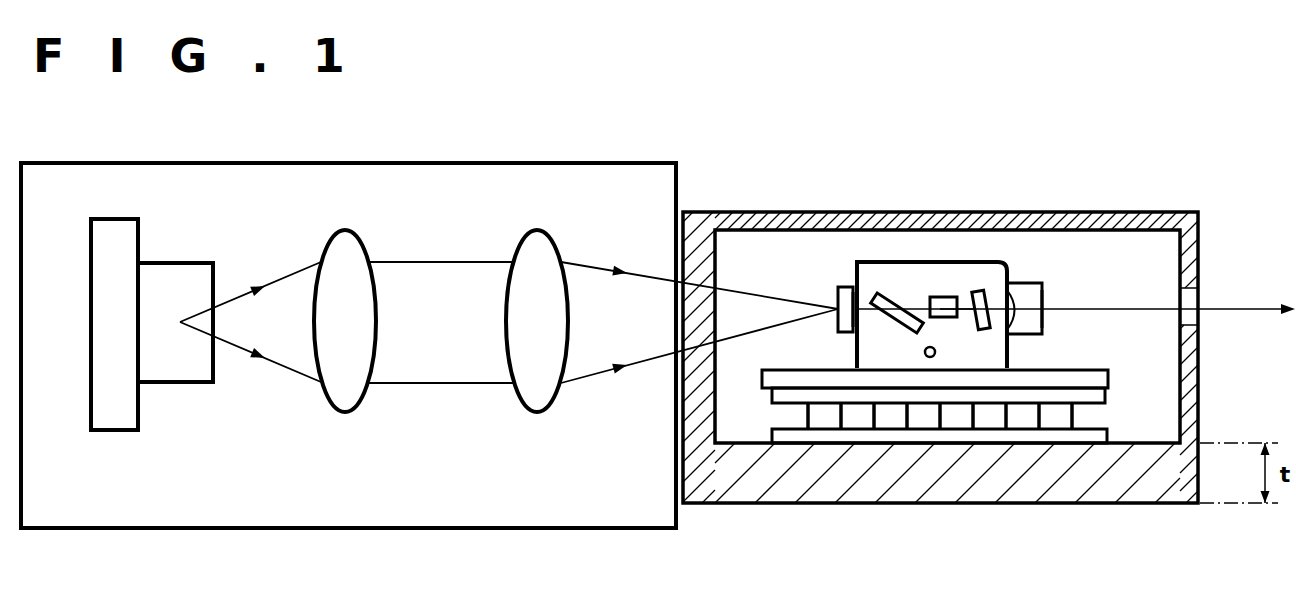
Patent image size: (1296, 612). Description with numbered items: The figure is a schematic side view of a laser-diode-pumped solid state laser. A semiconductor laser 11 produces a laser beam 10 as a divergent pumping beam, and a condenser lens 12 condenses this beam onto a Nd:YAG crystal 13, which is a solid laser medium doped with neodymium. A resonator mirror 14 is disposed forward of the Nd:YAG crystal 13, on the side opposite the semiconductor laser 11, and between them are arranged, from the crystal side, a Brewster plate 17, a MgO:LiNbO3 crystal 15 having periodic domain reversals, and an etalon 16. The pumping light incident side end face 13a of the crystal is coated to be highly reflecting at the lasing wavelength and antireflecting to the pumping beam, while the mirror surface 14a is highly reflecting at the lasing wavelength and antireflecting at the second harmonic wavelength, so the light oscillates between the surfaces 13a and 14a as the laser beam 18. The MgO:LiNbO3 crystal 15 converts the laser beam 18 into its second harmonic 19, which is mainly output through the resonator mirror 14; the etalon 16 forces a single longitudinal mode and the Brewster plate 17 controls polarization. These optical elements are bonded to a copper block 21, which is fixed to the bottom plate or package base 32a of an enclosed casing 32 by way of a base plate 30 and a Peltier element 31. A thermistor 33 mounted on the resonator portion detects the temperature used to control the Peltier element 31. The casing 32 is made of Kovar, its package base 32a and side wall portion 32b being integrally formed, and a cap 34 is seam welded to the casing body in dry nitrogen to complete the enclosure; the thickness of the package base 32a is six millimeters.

The laser beam 10 is at (240, 292).
The semiconductor laser 11 is at (116, 232).
The condenser lens 12 is at (555, 420).
The Nd:YAG crystal 13 is at (836, 283).
The pumping light incident side end face 13a is at (838, 313).
The resonator mirror 14 is at (1036, 278).
The mirror surface 14a is at (995, 310).
The MgO:LiNbO3 crystal 15 is at (935, 295).
The etalon 16 is at (980, 292).
The Brewster plate 17 is at (881, 293).
The laser beam 18 is at (967, 315).
The second harmonic 19 is at (1243, 306).
The copper block 21 is at (1000, 288).
The base plate 30 is at (1090, 370).
The Peltier element 31 is at (820, 417).
The enclosed casing 32 is at (983, 369).
The bottom plate (package base) 32a is at (1098, 485).
The side wall portion 32b is at (1200, 372).
The thermistor 33 is at (924, 352).
The cap 34 is at (1143, 212).